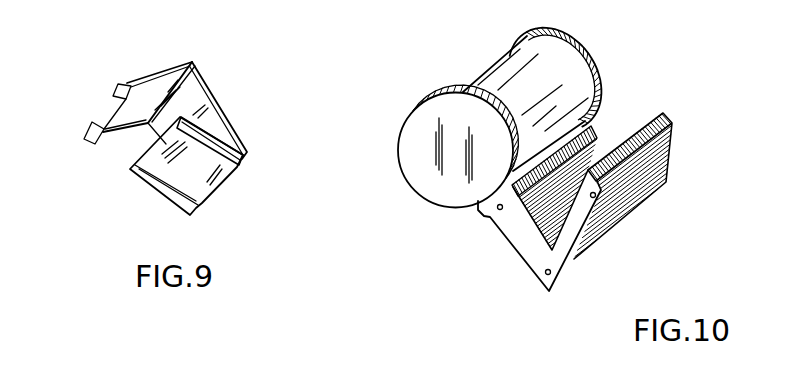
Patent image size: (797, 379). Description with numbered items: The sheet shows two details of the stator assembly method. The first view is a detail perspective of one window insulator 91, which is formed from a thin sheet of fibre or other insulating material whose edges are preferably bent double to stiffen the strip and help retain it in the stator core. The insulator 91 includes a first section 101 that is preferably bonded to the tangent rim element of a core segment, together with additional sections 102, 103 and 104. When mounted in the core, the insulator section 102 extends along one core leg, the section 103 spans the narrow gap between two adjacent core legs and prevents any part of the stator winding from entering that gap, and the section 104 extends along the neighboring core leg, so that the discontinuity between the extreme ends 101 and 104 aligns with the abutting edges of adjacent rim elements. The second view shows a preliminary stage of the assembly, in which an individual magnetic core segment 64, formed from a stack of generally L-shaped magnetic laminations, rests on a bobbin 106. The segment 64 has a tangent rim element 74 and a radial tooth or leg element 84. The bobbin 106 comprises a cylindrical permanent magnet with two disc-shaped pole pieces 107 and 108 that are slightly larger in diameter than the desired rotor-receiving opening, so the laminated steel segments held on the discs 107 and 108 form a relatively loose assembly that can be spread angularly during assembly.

In FIG. 9, the insulator 91 is at (202, 121).
In FIG. 9, the first section 101 is at (115, 140).
In FIG. 9, the insulator section 102 is at (227, 130).
In FIG. 9, the insulator section 103 is at (238, 160).
In FIG. 9, the insulator section 104 is at (180, 182).
In FIG. 10, the bobbin 106 is at (483, 73).
In FIG. 10, the pole piece 107 is at (592, 65).
In FIG. 10, the pole piece 108 is at (430, 187).
In FIG. 10, the leg element 84 is at (540, 223).
In FIG. 10, the tangent rim element 74 is at (675, 118).
In FIG. 10, the magnetic core segment 64 is at (607, 236).